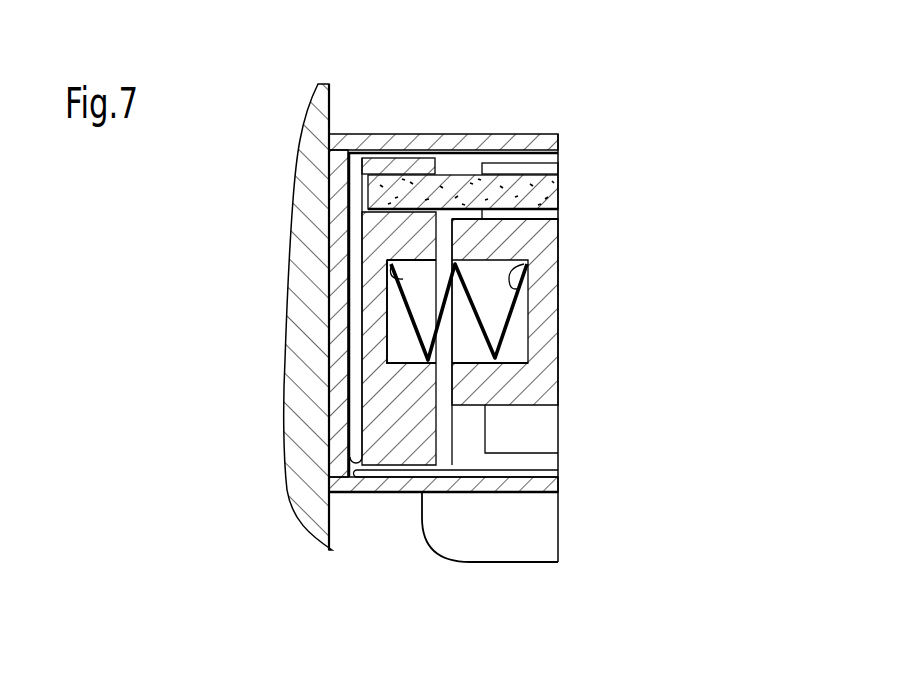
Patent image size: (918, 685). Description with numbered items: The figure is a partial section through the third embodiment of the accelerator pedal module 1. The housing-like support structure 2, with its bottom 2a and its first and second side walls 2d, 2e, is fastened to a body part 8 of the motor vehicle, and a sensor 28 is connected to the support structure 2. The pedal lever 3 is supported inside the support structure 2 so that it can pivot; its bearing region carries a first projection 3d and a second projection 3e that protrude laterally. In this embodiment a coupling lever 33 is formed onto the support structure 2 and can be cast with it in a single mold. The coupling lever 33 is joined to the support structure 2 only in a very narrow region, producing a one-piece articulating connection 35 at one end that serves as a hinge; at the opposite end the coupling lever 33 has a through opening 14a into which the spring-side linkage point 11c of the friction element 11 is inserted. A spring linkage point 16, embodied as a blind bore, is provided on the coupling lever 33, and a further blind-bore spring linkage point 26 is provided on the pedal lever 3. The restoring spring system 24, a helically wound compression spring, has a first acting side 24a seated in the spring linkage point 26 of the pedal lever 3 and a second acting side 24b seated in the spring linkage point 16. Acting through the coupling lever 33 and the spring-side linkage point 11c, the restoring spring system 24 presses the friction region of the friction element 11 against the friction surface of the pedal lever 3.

The accelerator pedal module 1 is at (645, 104).
The support structure 2 is at (384, 326).
The bottom 2a is at (333, 300).
The first side wall 2d is at (435, 142).
The second side wall 2e is at (477, 493).
The pedal lever 3 is at (553, 271).
The first projection 3d is at (528, 168).
The second projection 3e is at (543, 438).
The body part 8 is at (306, 151).
The first friction element 11 is at (560, 191).
The spring-side linkage point 11c is at (392, 186).
The through opening 14a is at (366, 193).
The spring linkage point 16 is at (392, 357).
The restoring spring system 24 is at (425, 289).
The first acting side 24a is at (509, 263).
The second acting side 24b is at (395, 260).
The spring linkage point 26 is at (508, 354).
The sensor 28 is at (542, 547).
The coupling lever 33 is at (410, 447).
The articulating connection 35 is at (360, 493).